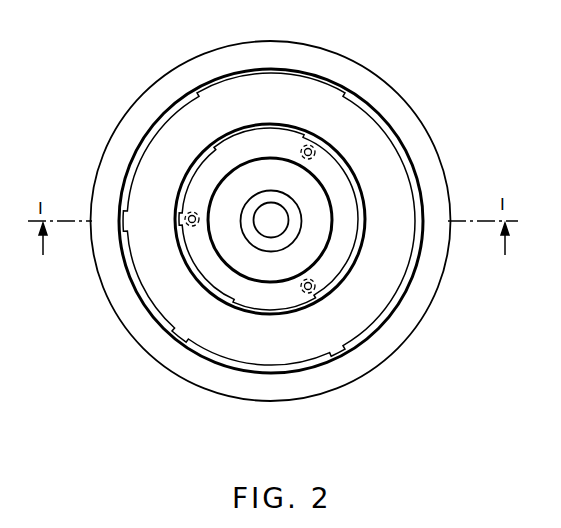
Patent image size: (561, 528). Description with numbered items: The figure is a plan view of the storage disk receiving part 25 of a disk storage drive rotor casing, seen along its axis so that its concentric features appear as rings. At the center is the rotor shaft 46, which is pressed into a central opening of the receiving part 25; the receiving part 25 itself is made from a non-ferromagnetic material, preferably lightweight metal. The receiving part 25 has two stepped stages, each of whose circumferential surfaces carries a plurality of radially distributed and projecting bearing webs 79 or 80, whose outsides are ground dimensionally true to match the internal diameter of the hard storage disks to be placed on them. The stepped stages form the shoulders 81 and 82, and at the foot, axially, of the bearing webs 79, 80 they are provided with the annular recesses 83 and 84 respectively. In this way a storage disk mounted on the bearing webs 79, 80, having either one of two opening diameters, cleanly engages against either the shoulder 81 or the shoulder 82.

The shoulder 81 is at (402, 108).
The annular recess 83 is at (167, 112).
The bearing webs 79 is at (198, 352).
The shoulder 82 is at (395, 175).
The annular recess 84 is at (188, 168).
The bearing webs 80 is at (227, 300).
The storage disk receiving part 25 is at (197, 243).
The rotor shaft 46 is at (277, 228).